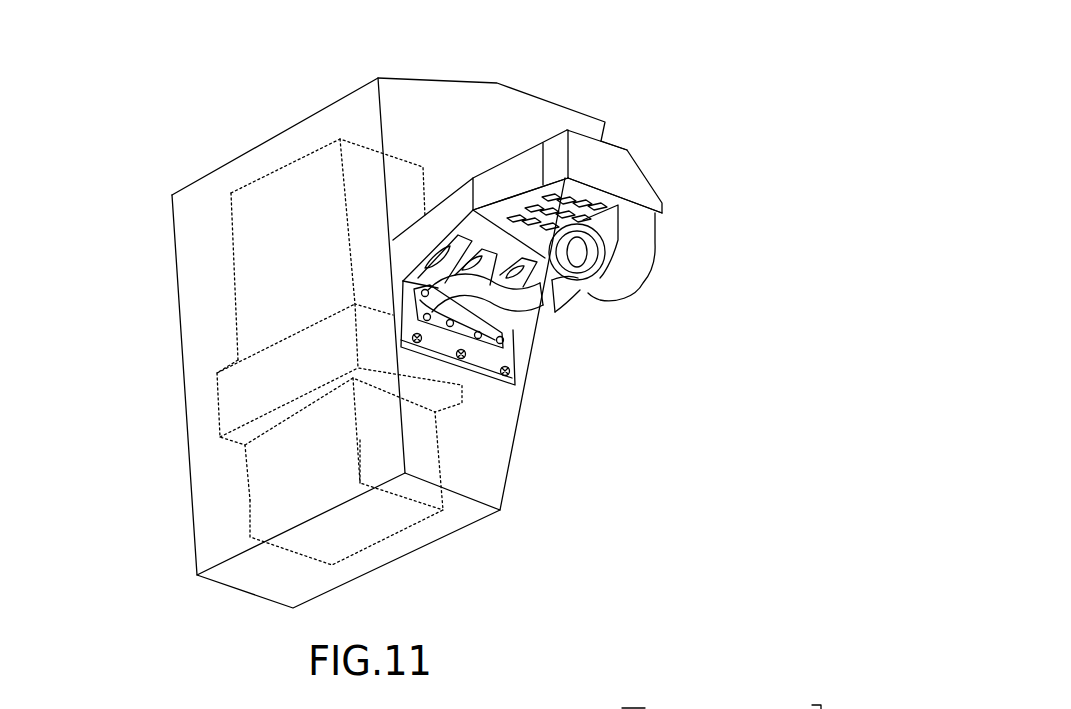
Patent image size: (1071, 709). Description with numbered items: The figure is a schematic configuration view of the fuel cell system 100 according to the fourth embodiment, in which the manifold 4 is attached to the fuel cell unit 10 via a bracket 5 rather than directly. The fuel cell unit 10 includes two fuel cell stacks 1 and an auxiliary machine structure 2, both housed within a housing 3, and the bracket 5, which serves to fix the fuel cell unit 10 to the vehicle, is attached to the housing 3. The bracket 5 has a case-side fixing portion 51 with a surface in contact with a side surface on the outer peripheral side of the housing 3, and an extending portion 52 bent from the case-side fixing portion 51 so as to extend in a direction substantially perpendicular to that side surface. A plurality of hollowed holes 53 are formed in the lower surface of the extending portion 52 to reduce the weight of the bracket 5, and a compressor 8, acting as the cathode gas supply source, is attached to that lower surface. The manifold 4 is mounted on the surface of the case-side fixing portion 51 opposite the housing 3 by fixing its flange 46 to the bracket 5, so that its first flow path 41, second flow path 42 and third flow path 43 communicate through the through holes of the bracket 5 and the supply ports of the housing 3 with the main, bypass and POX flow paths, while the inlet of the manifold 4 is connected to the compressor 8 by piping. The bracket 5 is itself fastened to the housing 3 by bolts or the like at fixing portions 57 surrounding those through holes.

The fuel cell system 100 is at (656, 61).
The fuel cell unit 10 is at (107, 226).
The fuel cell stack 1 is at (237, 282).
The auxiliary machine structure 2 is at (218, 412).
The housing 3 is at (185, 368).
The manifold 4 is at (530, 333).
The bracket 5 is at (648, 170).
The compressor 8 is at (625, 282).
The first flow path 41 is at (452, 335).
The second flow path 42 is at (520, 377).
The third flow path 43 is at (514, 376).
The flange 46 is at (470, 360).
The case-side fixing portion 51 is at (434, 345).
The extending portion 52 is at (477, 177).
The hollowed holes 53 is at (595, 203).
The fixing portions 57 is at (417, 343).